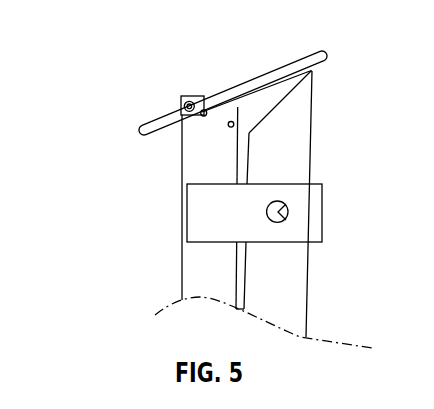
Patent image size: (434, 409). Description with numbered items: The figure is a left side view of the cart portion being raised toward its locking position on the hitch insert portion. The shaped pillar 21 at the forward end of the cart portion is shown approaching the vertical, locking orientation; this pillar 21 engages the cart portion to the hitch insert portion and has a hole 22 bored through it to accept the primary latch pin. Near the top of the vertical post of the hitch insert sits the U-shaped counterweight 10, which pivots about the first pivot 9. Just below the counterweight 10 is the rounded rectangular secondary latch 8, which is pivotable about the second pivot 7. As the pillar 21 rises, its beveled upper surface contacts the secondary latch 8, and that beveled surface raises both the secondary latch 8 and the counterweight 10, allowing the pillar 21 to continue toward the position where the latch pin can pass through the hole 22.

The second pivot 7 is at (202, 111).
The secondary latch 8 is at (256, 87).
The first pivot 9 is at (187, 103).
The counterweight 10 is at (256, 78).
The pillar 21 is at (277, 271).
The hole 22 is at (267, 217).